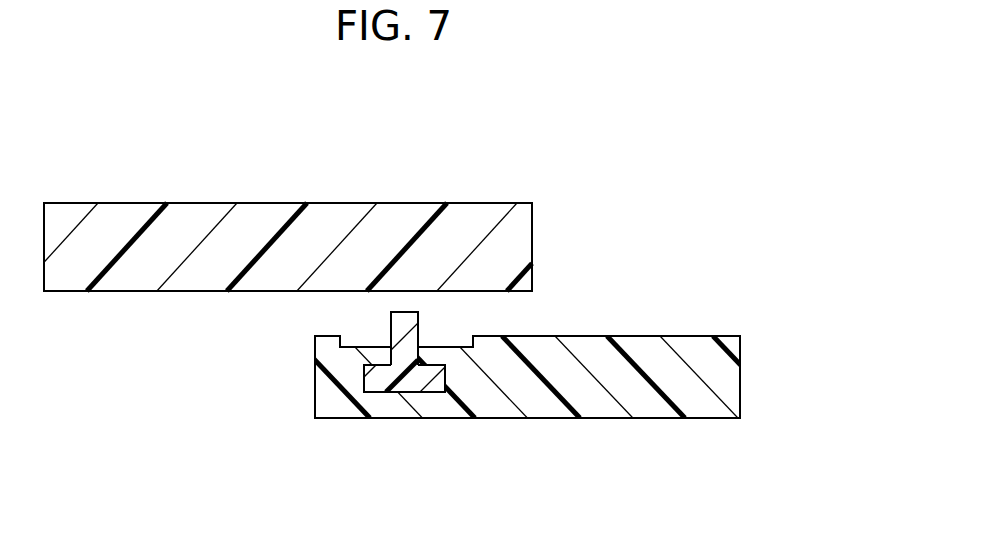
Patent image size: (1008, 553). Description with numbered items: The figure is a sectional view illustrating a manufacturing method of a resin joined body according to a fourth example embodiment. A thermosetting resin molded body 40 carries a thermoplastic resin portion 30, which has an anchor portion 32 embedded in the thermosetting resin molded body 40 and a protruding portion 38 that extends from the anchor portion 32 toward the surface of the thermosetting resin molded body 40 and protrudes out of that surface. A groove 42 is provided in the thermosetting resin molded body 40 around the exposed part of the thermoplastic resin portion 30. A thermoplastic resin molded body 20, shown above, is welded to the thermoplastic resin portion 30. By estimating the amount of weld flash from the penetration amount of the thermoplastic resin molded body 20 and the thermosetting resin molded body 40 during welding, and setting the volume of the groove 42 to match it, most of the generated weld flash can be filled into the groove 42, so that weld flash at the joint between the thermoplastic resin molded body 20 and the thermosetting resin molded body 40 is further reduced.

The thermoplastic resin molded body 20 is at (137, 203).
The thermoplastic resin portion 30 is at (323, 350).
The anchor portion 32 is at (377, 375).
The protruding portion 38 is at (402, 323).
The thermosetting resin molded body 40 is at (688, 336).
The groove 42 is at (475, 342).